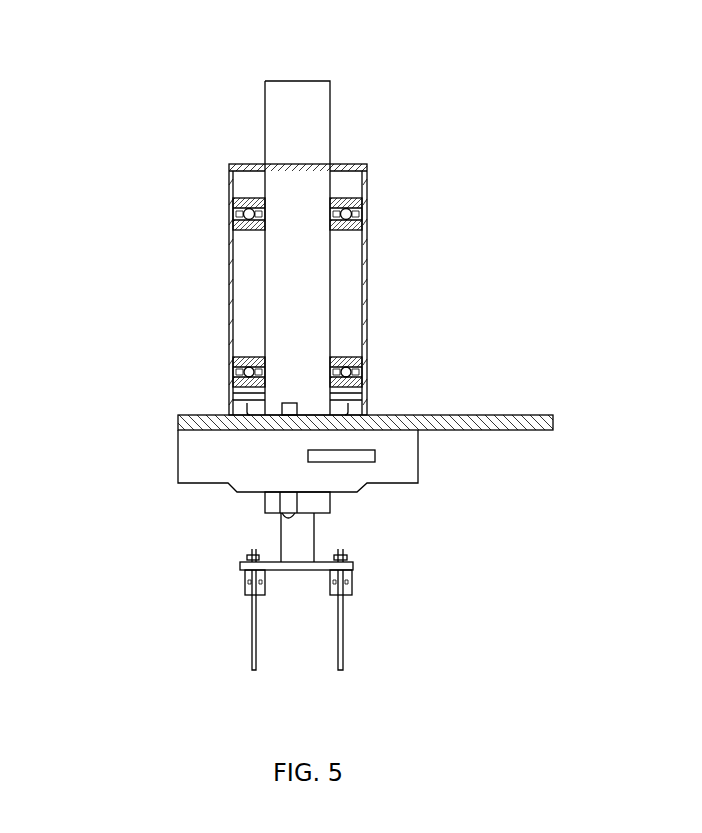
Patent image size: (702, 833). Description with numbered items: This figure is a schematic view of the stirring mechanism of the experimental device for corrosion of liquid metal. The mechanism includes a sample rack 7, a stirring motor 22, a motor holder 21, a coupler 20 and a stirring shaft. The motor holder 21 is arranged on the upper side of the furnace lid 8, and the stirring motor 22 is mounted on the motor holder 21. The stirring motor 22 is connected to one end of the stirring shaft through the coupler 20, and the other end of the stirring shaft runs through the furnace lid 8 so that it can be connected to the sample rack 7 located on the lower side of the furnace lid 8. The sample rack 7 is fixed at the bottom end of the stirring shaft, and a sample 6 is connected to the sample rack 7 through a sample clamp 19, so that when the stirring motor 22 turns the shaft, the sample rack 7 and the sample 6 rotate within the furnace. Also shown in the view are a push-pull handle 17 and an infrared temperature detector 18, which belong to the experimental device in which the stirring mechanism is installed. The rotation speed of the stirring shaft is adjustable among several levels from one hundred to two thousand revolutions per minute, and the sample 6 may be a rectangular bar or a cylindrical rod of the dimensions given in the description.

The stirring motor 22 is at (316, 124).
The motor holder 21 is at (350, 167).
The coupler 20 is at (358, 362).
The infrared temperature detector 18 is at (293, 408).
The push-pull handle 17 is at (345, 458).
The furnace lid 8 is at (230, 455).
The sample rack 7 is at (295, 567).
The clamp 19 is at (348, 574).
The sample 6 is at (340, 628).